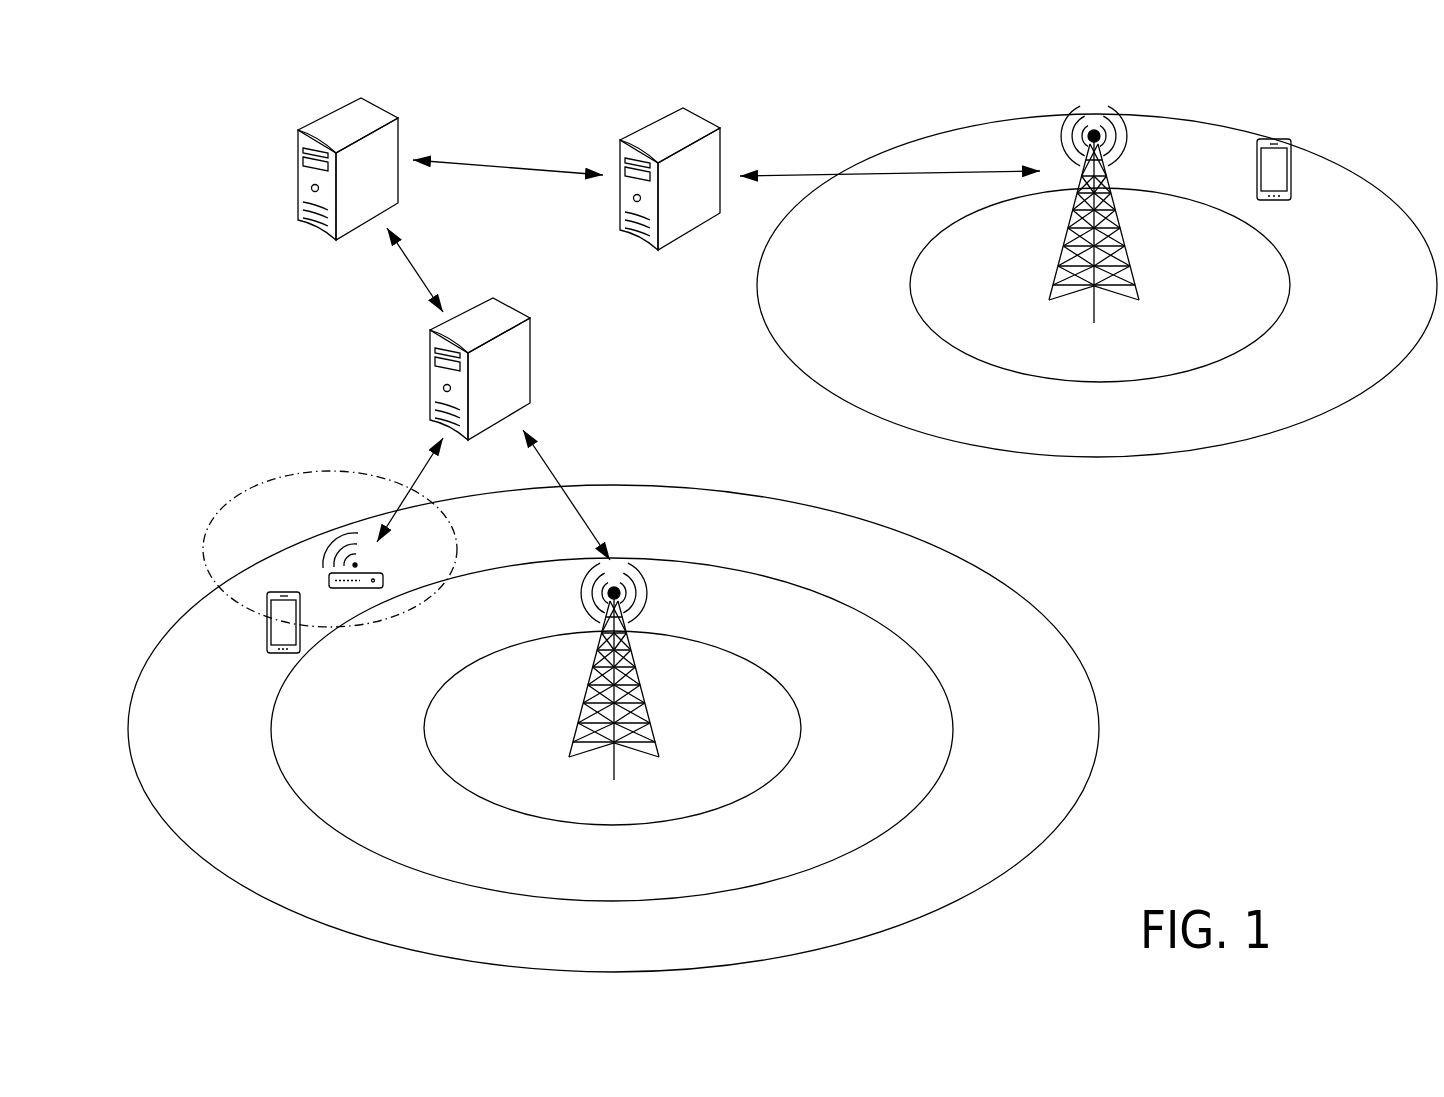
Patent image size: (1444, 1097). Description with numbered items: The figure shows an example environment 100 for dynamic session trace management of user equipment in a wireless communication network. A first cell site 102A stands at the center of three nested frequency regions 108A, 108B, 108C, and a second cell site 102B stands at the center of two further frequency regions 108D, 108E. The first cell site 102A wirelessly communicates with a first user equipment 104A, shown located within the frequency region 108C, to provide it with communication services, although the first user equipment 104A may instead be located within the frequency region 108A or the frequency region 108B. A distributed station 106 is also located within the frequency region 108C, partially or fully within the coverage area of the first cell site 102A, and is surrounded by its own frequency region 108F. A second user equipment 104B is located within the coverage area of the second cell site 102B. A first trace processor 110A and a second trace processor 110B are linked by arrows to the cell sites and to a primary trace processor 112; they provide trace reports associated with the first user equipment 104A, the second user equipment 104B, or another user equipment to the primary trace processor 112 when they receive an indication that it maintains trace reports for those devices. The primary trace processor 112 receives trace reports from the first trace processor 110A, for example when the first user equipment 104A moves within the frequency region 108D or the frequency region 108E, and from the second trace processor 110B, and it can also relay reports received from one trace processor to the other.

The example environment 100 is at (222, 336).
The first cell site 102A is at (580, 592).
The second cell site 102B is at (1057, 140).
The first user equipment 104A is at (305, 637).
The second user equipment 104B is at (1292, 150).
The distributed station 106 is at (340, 541).
The frequency region 108A is at (627, 801).
The frequency region 108B is at (655, 873).
The frequency region 108C is at (686, 947).
The frequency region 108D is at (1175, 354).
The frequency region 108E is at (1143, 430).
The frequency region 108F is at (218, 550).
The first trace processor 110A is at (480, 302).
The second trace processor 110B is at (674, 110).
The primary trace processor 112 is at (350, 98).